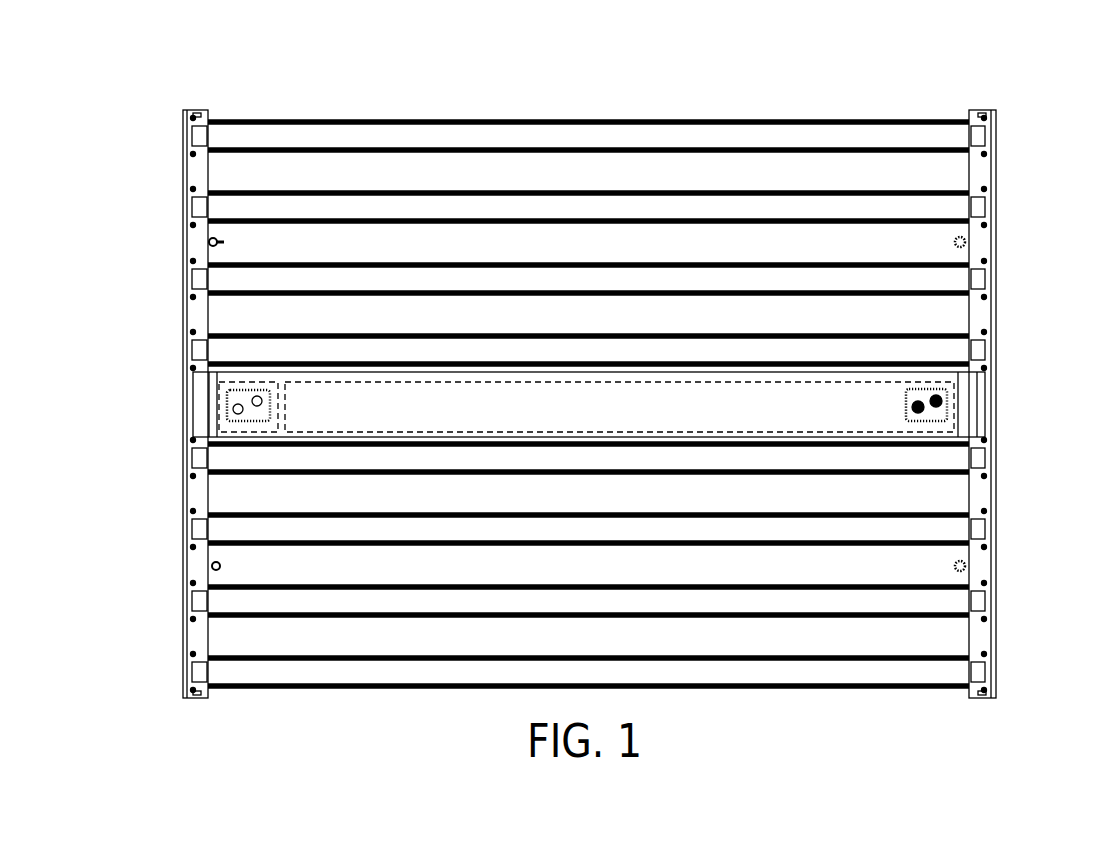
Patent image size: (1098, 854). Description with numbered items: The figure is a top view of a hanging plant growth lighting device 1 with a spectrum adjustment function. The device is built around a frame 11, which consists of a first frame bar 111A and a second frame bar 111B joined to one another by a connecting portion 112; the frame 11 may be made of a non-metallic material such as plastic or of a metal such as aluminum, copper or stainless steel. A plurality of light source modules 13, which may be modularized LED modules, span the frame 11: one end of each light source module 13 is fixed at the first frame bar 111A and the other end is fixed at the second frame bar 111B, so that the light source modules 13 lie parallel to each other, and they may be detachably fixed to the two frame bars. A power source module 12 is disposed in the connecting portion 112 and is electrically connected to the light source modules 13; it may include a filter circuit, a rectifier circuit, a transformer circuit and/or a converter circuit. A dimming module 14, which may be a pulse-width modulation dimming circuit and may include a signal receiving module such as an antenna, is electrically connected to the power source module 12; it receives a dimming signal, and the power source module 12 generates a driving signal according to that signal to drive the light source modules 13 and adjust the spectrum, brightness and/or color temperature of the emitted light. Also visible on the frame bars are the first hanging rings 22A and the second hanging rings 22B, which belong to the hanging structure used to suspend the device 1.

The hanging plant growth lighting device 1 is at (279, 104).
The frame 11 is at (199, 102).
The first frame bar 111A is at (197, 312).
The second frame bar 111B is at (981, 177).
The connecting portion 112 is at (986, 403).
The power source module 12 is at (951, 385).
The light source modules 13 is at (844, 131).
The dimming module 14 is at (229, 403).
The first hanging rings 22A is at (208, 242).
The second hanging rings 22B is at (965, 242).